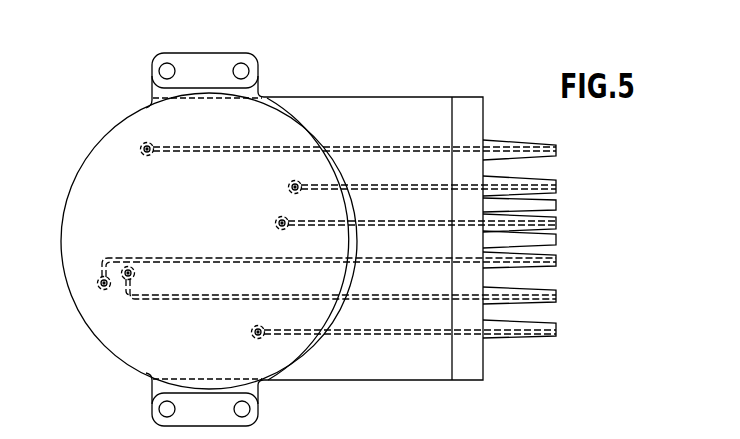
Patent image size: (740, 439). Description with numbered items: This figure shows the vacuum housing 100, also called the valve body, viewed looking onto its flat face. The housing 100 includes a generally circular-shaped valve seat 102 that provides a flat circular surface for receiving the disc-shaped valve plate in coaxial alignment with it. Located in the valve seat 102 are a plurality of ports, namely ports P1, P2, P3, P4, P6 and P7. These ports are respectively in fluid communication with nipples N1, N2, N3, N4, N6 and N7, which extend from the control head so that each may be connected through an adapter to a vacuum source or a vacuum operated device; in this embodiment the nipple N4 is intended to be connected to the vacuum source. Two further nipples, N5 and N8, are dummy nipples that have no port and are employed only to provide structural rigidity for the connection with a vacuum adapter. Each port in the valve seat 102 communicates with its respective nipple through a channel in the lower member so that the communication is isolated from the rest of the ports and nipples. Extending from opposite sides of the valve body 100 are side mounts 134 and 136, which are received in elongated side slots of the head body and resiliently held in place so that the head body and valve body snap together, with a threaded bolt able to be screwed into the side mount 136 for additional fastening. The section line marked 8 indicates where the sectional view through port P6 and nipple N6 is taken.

The vacuum housing 100 is at (334, 82).
The valve seat 102 is at (103, 180).
The side mount 136 is at (198, 68).
The side mount 134 is at (185, 400).
The port P1 is at (130, 267).
The port P2 is at (253, 330).
The port P3 is at (143, 146).
The port P4 is at (276, 224).
The port P6 is at (107, 289).
The port P7 is at (289, 185).
The nipple N1 is at (544, 299).
The nipple N2 is at (533, 338).
The nipple N3 is at (554, 146).
The nipple N4 is at (554, 226).
The dummy nipple N5 is at (554, 204).
The nipple N6 is at (547, 263).
The nipple N7 is at (554, 180).
The dummy nipple N8 is at (551, 242).
The section line 8- 8 is at (53, 283).